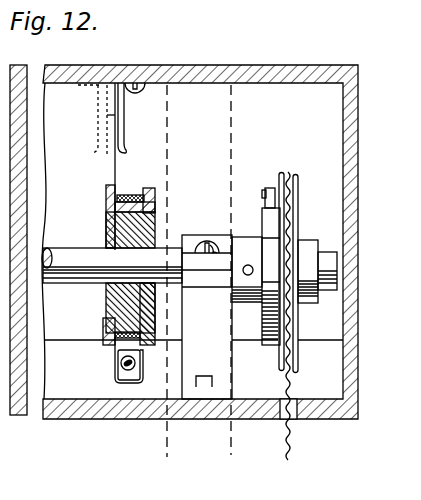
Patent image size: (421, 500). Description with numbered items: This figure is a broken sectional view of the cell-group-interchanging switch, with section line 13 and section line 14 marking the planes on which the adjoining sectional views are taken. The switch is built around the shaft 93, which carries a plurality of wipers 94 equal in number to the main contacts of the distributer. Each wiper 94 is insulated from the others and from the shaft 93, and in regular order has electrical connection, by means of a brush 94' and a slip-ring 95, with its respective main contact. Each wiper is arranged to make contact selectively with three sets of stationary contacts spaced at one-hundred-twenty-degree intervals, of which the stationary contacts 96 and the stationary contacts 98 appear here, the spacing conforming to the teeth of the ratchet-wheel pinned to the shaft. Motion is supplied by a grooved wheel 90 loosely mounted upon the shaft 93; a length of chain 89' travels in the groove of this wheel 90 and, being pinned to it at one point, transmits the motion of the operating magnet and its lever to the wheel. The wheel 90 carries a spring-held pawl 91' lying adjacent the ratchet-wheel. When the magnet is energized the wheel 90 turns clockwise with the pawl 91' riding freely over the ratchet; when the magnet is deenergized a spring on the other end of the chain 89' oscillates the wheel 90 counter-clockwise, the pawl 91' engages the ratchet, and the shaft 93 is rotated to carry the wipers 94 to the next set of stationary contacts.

The section line 13 is at (195, 56).
The section line 14 is at (205, 56).
The stationary contacts 96 is at (118, 107).
The wipers 94 is at (86, 166).
The brush 94' is at (140, 138).
The slip-ring 95 is at (106, 198).
The shaft 93 is at (68, 255).
The spring-held pawl 91' is at (267, 248).
The grooved wheel 90 is at (298, 187).
The stationary contacts 98 is at (118, 358).
The chain 89' is at (316, 320).